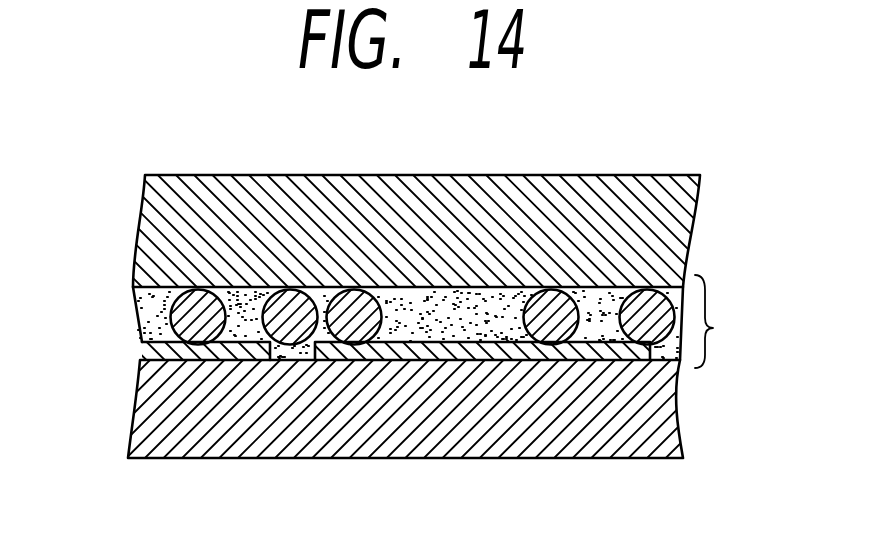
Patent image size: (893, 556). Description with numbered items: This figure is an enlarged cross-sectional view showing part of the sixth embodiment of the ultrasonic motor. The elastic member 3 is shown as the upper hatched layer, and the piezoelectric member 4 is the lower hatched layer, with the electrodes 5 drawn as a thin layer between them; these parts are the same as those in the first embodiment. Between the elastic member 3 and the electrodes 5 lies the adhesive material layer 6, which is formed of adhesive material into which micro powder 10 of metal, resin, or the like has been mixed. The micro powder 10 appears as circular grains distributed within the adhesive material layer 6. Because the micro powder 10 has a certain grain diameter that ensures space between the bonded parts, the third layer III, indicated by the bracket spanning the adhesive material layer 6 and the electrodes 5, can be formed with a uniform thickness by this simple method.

The elastic member 3 is at (667, 202).
The piezoelectric member 4 is at (642, 398).
The electrodes 5 is at (350, 360).
The adhesive material layer 6 is at (135, 320).
The micro powder 10 is at (648, 315).
The third layer III is at (743, 340).